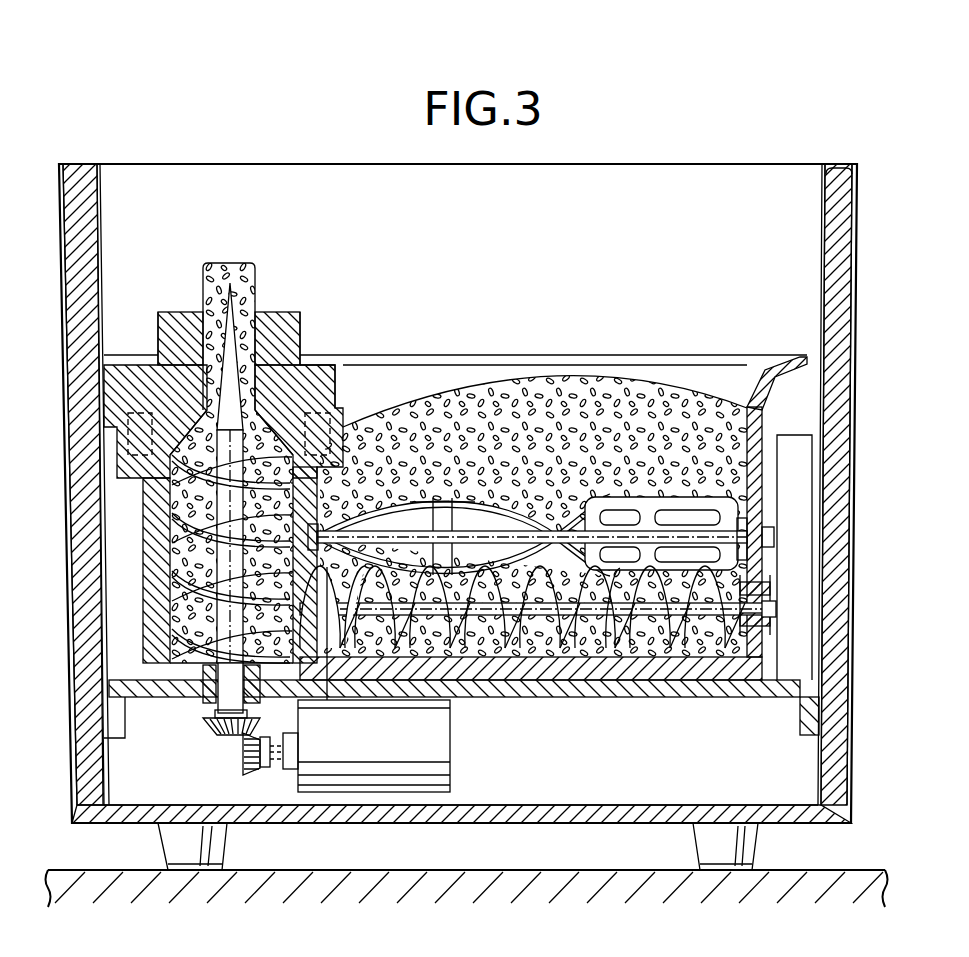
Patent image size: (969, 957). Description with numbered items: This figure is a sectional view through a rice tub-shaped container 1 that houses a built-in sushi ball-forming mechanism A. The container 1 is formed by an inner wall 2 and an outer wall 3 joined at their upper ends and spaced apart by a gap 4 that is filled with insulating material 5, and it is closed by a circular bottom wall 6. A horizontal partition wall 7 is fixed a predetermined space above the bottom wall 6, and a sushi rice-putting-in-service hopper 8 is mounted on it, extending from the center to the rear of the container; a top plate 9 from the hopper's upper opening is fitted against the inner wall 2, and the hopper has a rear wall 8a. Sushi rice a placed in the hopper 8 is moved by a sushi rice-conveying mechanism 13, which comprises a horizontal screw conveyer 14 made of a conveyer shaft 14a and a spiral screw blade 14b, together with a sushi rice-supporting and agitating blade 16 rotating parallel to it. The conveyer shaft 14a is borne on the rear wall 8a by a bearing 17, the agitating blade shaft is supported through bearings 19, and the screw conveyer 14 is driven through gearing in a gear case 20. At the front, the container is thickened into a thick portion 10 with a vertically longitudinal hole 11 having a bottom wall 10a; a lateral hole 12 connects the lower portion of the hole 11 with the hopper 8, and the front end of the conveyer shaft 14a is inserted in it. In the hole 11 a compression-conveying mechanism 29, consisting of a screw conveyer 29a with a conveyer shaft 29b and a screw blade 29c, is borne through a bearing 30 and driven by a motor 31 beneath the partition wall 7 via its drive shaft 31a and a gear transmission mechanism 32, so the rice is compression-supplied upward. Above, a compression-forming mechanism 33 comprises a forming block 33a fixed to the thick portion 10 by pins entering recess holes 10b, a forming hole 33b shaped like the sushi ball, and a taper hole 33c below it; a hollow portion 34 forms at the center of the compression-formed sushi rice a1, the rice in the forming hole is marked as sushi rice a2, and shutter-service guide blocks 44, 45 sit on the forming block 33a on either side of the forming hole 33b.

The rice tub-shaped container 1 is at (856, 307).
The inner wall 2 is at (822, 200).
The outer wall 3 is at (857, 174).
The gap 4 is at (847, 226).
The insulating material 5 is at (836, 283).
The bottom wall 6 is at (625, 823).
The horizontal partition wall 7 is at (720, 697).
The sushi rice-putting-in-service hopper 8 is at (675, 385).
The rear wall 8a is at (762, 486).
The top plate 9 is at (785, 378).
The thick portion 10 is at (175, 560).
The bottom wall 10a is at (188, 678).
The recess holes 10b is at (118, 447).
The vertically longitudinal hole 11 is at (225, 596).
The lateral hole 12 is at (330, 700).
The sushi rice-conveying mechanism 13 is at (485, 497).
The screw conveyer 14 is at (545, 648).
The conveyer shaft 14a is at (590, 648).
The screw blade 14b is at (615, 648).
The sushi rice-supporting and agitating blade 16 is at (572, 507).
The bearing 17 is at (762, 645).
The bearings 19 is at (774, 539).
The gear case 20 is at (800, 603).
The compression-conveying mechanism 29 is at (165, 510).
The screw conveyer 29a is at (152, 540).
The conveyer shaft 29b is at (215, 598).
The screw blade 29c is at (150, 698).
The bearing 30 is at (235, 748).
The motor 31 is at (430, 776).
The drive shaft 31a is at (272, 768).
The gear transmission mechanism 32 is at (240, 750).
The compression-forming mechanism 33 is at (190, 372).
The forming block 33a is at (172, 360).
The forming hole 33b is at (258, 348).
The taper hole 33c is at (310, 395).
The hollow portion 34 is at (263, 322).
The shutter-service guide block 44 is at (168, 312).
The shutter-service guide block 45 is at (292, 312).
The sushi rice a is at (628, 380).
The compression-formed sushi rice a1 is at (197, 403).
The grain in tube a2 is at (241, 268).
The sushi ball-forming mechanism A is at (366, 302).